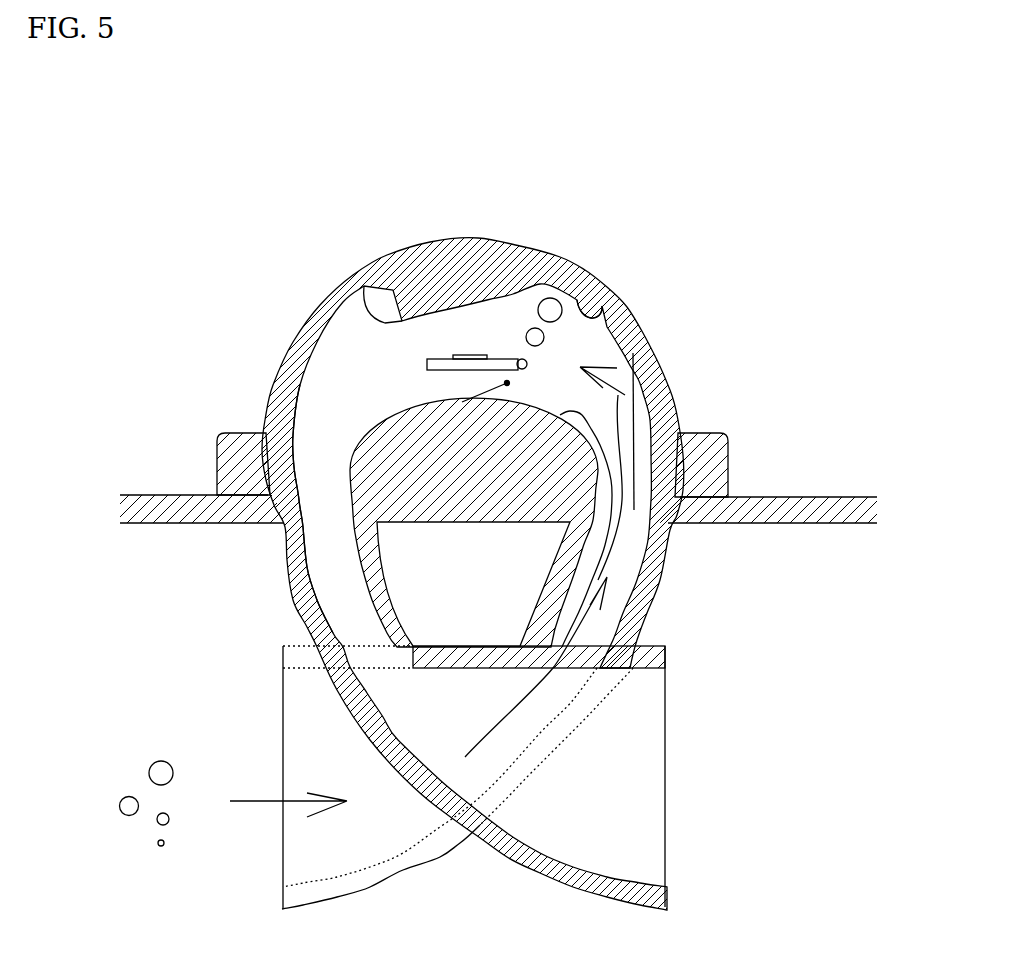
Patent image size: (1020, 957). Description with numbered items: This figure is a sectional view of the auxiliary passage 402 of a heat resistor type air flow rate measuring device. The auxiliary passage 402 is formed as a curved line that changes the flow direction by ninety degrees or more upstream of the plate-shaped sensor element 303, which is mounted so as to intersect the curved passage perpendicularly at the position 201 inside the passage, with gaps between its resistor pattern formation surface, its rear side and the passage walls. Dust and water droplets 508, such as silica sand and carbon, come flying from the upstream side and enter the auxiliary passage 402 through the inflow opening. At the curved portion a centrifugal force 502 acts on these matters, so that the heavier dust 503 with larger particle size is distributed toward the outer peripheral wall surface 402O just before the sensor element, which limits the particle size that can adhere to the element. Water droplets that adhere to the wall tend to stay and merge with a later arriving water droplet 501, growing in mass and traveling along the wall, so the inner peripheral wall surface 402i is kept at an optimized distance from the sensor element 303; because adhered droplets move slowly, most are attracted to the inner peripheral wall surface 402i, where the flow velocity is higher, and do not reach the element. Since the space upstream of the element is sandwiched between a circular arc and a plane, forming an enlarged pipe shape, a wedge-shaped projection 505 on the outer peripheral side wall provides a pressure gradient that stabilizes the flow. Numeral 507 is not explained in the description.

The auxiliary passage 402 is at (322, 404).
The centrifugal force 502 is at (620, 385).
The sensor holder 507 is at (433, 367).
The mounting position of the plate-shaped sensor element 201 is at (393, 417).
The plate-shaped sensor element 303 is at (468, 356).
The heavier dust 503 is at (548, 305).
The wedge-shaped projection 505 is at (365, 290).
The outer peripheral wall surface 402O is at (605, 318).
The inner peripheral wall surface 402i is at (392, 423).
The water droplet 501 is at (600, 420).
The dust and water droplet 508 is at (160, 772).